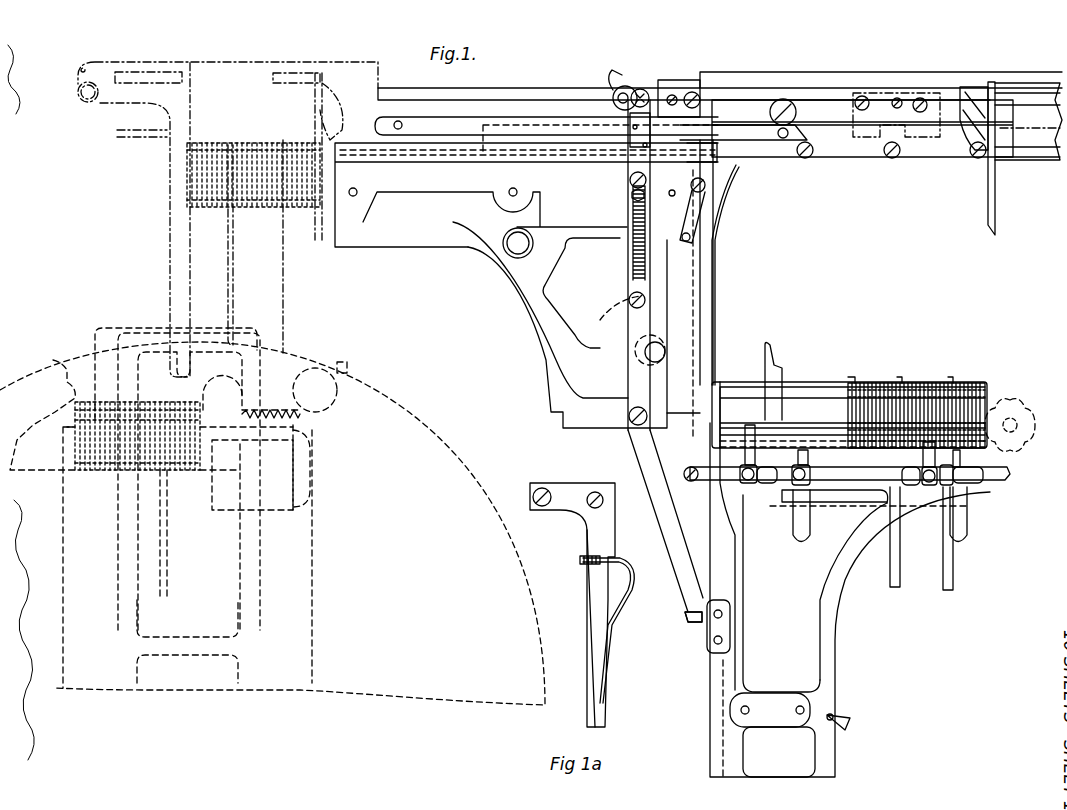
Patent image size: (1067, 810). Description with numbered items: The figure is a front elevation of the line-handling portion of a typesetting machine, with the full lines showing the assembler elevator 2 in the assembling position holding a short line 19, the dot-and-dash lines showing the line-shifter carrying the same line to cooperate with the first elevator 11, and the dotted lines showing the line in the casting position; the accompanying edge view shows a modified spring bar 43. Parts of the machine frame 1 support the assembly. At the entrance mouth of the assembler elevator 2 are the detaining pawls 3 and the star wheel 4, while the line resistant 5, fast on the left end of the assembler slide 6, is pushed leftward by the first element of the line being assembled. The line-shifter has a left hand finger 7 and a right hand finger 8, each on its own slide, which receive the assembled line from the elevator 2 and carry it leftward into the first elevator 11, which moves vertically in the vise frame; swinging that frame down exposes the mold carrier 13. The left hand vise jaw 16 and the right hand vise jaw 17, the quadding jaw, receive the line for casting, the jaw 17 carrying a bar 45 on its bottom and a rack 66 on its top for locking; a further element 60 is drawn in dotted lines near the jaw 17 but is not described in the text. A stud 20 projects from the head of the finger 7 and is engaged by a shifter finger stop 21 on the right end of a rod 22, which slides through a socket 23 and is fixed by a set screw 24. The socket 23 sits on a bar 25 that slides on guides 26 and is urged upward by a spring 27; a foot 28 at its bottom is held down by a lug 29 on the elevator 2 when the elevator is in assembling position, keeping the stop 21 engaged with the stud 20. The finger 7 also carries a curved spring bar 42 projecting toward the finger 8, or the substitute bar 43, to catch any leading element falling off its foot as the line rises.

In FIG. 1, the machine frame 1 is at (520, 300).
In FIG. 1, the assembler elevator 2 is at (840, 590).
In FIG. 1, the detaining pawls 3 is at (990, 385).
In FIG. 1, the star wheel 4 is at (1020, 408).
In FIG. 1, the line resistant 5 is at (852, 380).
In FIG. 1, the assembler slide 6 is at (985, 490).
In FIG. 1, the left hand finger of the line-shifter 7 is at (170, 178).
In FIG. 1A, the left hand finger of the line-shifter 7 is at (588, 532).
In FIG. 1, the right hand finger of the line-shifter 8 is at (318, 232).
In FIG. 1, the first elevator 11 is at (62, 605).
In FIG. 1, the mold carrier 13 is at (420, 427).
In FIG. 1, the left hand vise jaw 16 is at (53, 361).
In FIG. 1, the right hand vise jaw 17 is at (228, 383).
In FIG. 1, the line 19 is at (262, 140).
In FIG. 1, the stud 20 is at (670, 96).
In FIG. 1, the shifter finger stop 21 is at (692, 92).
In FIG. 1, the rod 22 is at (548, 88).
In FIG. 1, the socket 23 is at (640, 88).
In FIG. 1, the set screw 24 is at (623, 88).
In FIG. 1, the bar 25 is at (629, 300).
In FIG. 1, the guides 26 is at (630, 182).
In FIG. 1, the spring 27 is at (632, 222).
In FIG. 1, the foot 28 is at (695, 625).
In FIG. 1, the lug 29 is at (688, 614).
In FIG. 1, the spring bar 42 is at (739, 168).
In FIG. 1A, the substitute spring bar 43 is at (616, 656).
In FIG. 1, the bar 45 is at (212, 505).
In FIG. 1, the wheel 60 is at (315, 390).
In FIG. 1, the rack 66 is at (300, 416).